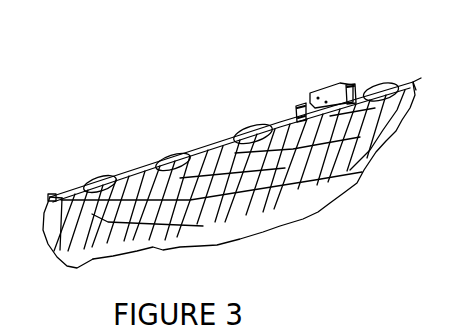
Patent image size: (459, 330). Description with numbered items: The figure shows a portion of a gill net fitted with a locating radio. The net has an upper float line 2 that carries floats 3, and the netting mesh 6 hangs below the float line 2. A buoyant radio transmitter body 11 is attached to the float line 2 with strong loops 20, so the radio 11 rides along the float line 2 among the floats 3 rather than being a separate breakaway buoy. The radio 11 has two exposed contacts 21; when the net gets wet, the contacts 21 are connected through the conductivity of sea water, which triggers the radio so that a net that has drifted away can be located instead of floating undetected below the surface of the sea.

The float line 2 is at (69, 186).
The floats 3 is at (100, 166).
The netting mesh 6 is at (72, 250).
The buoyant radio transmitter body 11 is at (321, 87).
The strong loops 20 is at (299, 110).
The contacts 21 is at (350, 86).